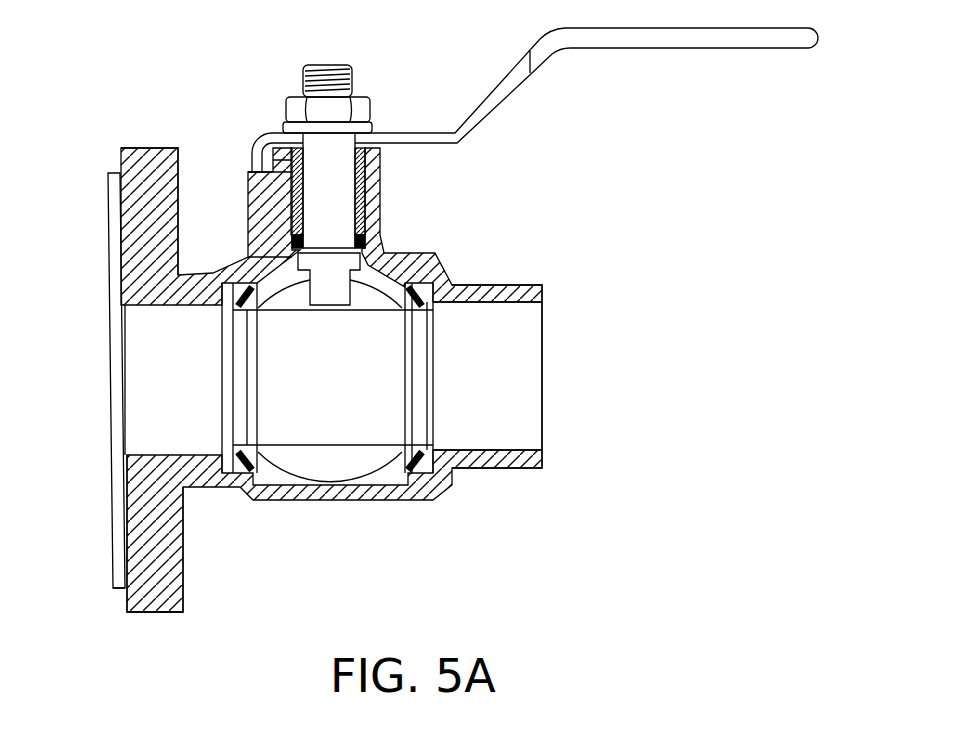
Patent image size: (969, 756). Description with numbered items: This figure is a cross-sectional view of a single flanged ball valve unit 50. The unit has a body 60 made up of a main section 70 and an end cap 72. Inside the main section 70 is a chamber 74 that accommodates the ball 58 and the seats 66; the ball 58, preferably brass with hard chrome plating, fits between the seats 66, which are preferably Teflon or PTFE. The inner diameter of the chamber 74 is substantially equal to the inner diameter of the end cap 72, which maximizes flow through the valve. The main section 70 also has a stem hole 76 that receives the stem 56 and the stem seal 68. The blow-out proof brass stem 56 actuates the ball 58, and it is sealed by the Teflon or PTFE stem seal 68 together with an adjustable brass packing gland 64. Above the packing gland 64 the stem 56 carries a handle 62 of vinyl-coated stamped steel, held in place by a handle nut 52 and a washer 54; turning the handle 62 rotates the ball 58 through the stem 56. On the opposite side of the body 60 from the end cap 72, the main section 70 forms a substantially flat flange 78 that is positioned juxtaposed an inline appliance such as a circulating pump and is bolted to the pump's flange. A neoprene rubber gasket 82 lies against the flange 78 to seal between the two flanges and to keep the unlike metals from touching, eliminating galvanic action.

The single flanged ball valve unit 50 is at (151, 68).
The handle nut 52 is at (283, 91).
The washer 54 is at (283, 123).
The stem 56 is at (345, 218).
The ball 58 is at (395, 475).
The body 60 is at (353, 497).
The handle 62 is at (605, 122).
The packing gland 64 is at (290, 165).
The seats 66 is at (132, 478).
The stem seal 68 is at (372, 233).
The main section 70 is at (185, 565).
The end cap 72 is at (520, 470).
The chamber 74 is at (270, 490).
The stem hole 76 is at (372, 170).
The flange 78 is at (125, 600).
The rubber gasket 82 is at (108, 296).